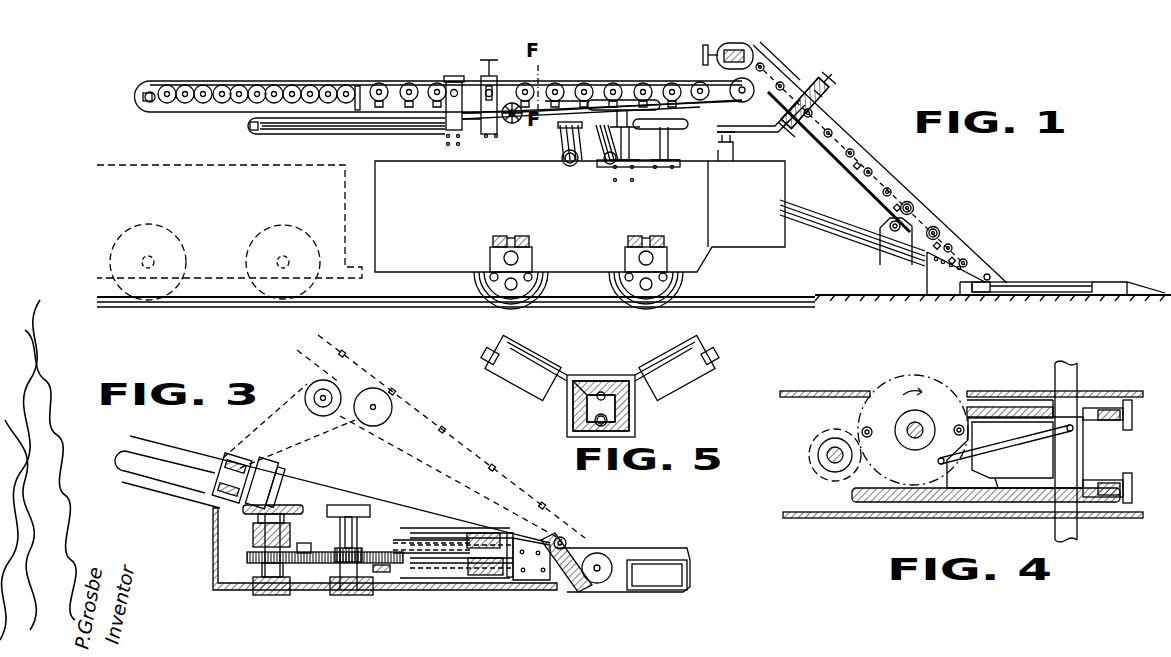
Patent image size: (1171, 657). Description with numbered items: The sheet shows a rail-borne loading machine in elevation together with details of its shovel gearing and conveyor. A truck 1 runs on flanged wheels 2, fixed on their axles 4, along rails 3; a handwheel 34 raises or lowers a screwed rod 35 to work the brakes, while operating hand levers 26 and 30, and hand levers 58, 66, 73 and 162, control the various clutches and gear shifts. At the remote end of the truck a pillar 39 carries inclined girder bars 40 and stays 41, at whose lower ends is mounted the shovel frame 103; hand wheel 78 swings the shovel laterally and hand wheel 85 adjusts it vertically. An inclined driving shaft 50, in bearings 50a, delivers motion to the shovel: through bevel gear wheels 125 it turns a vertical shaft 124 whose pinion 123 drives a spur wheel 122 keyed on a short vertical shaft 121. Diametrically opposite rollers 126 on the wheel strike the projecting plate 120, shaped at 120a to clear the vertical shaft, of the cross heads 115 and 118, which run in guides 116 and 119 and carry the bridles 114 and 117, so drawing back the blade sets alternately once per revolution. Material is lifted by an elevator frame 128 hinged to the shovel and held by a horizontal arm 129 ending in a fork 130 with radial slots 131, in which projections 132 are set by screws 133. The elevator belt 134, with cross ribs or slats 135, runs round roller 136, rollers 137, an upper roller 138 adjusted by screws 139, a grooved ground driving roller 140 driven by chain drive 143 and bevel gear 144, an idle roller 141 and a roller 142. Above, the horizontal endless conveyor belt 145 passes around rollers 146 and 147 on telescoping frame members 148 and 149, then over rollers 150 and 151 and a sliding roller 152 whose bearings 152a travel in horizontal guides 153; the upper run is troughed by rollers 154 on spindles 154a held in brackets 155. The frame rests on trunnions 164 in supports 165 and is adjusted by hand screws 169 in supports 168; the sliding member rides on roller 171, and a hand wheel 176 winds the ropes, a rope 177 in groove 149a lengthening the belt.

In FIG. 1, the truck 1 is at (580, 216).
In FIG. 1, the flanged wheels 2 is at (477, 285).
In FIG. 1, the rails 3 is at (742, 294).
In FIG. 1, the axles 4 is at (518, 258).
In FIG. 1, the operating hand lever 26 is at (562, 128).
In FIG. 1, the operating hand lever 30 is at (578, 160).
In FIG. 1, the handwheel 34 is at (685, 124).
In FIG. 1, the rod 35 is at (673, 160).
In FIG. 1, the pillar 39 is at (733, 150).
In FIG. 1, the inclined girder bars 40 is at (817, 228).
In FIG. 3, the inclined girder bars 40 is at (163, 500).
In FIG. 4, the inclined girder bars 40 is at (810, 390).
In FIG. 1, the stays 41 is at (797, 208).
In FIG. 3, the inclined driving shaft 50 is at (146, 465).
In FIG. 3, the bearings 50a is at (262, 460).
In FIG. 1, the hand lever 58 is at (627, 167).
In FIG. 1, the hand lever 66 is at (630, 147).
In FIG. 1, the hand lever 73 is at (597, 160).
In FIG. 1, the hand wheel 78 is at (597, 100).
In FIG. 1, the hand wheel 85 is at (625, 110).
In FIG. 1, the frame 103 is at (1087, 281).
In FIG. 3, the frame 103 is at (678, 555).
In FIG. 3, the bridle 114 is at (530, 540).
In FIG. 4, the bridle 114 is at (1067, 363).
In FIG. 3, the cross head 115 is at (563, 537).
In FIG. 4, the cross head 115 is at (1083, 453).
In FIG. 3, the guides 116 is at (446, 533).
In FIG. 4, the guides 116 is at (1047, 410).
In FIG. 3, the bridle 117 is at (500, 577).
In FIG. 3, the cross head 118 is at (477, 575).
In FIG. 3, the guides 119 is at (437, 580).
In FIG. 3, the projecting plate 120 is at (405, 540).
In FIG. 4, the projecting plate 120 is at (1007, 480).
In FIG. 4, the shaped portion 120a is at (918, 480).
In FIG. 3, the short vertical shaft 121 is at (358, 527).
In FIG. 4, the short vertical shaft 121 is at (921, 425).
In FIG. 3, the spur wheel 122 is at (323, 563).
In FIG. 4, the spur wheel 122 is at (917, 374).
In FIG. 3, the pinion 123 is at (247, 558).
In FIG. 4, the pinion 123 is at (825, 433).
In FIG. 3, the vertical shaft 124 is at (268, 595).
In FIG. 4, the vertical shaft 124 is at (826, 455).
In FIG. 3, the bevel gear wheels 125 is at (243, 512).
In FIG. 3, the rollers 126 is at (305, 542).
In FIG. 4, the rollers 126 is at (867, 426).
In FIG. 1, the frame 128 is at (980, 257).
In FIG. 1, the horizontal arm 129 is at (757, 126).
In FIG. 1, the fork 130 is at (810, 82).
In FIG. 1, the radial slots 131 is at (787, 128).
In FIG. 1, the projections 132 is at (823, 93).
In FIG. 1, the screws 133 is at (832, 78).
In FIG. 1, the elevator belt 134 is at (918, 208).
In FIG. 3, the elevator belt 134 is at (490, 465).
In FIG. 1, the cross ribs or slats 135 is at (874, 164).
In FIG. 3, the cross ribs or slats 135 is at (450, 434).
In FIG. 1, the roller 136 is at (993, 270).
In FIG. 3, the roller 136 is at (603, 580).
In FIG. 1, the rollers 137 is at (833, 133).
In FIG. 1, the roller 138 is at (733, 42).
In FIG. 1, the screws 139 is at (705, 46).
In FIG. 1, the ground driving roller 140 is at (913, 194).
In FIG. 3, the ground driving roller 140 is at (320, 384).
In FIG. 1, the idle roller 141 is at (938, 233).
In FIG. 3, the idle roller 141 is at (385, 390).
In FIG. 3, the roller 142 is at (589, 545).
In FIG. 1, the chain drive 143 is at (880, 222).
In FIG. 3, the chain drive 143 is at (258, 428).
In FIG. 3, the bevel gear 144 is at (207, 462).
In FIG. 1, the horizontal endless conveyor belt 145 is at (306, 84).
In FIG. 5, the horizontal endless conveyor belt 145 is at (567, 373).
In FIG. 1, the rollers 146 is at (777, 72).
In FIG. 1, the rollers 147 is at (148, 92).
In FIG. 1, the frame member 148 is at (380, 83).
In FIG. 5, the frame member 148 is at (630, 403).
In FIG. 1, the frame member 149 is at (242, 85).
In FIG. 5, the frame member 149 is at (607, 388).
In FIG. 5, the groove 149a is at (613, 427).
In FIG. 1, the roller 150 is at (496, 118).
In FIG. 1, the roller 151 is at (467, 133).
In FIG. 1, the roller 152 is at (253, 133).
In FIG. 1, the bearings 152a is at (263, 134).
In FIG. 1, the horizontal guides 153 is at (410, 128).
In FIG. 1, the rollers 154 is at (188, 85).
In FIG. 5, the rollers 154 is at (520, 375).
In FIG. 5, the spindles 154a is at (488, 352).
In FIG. 1, the brackets 155 is at (567, 100).
In FIG. 5, the brackets 155 is at (567, 413).
In FIG. 1, the hand lever 162 is at (565, 145).
In FIG. 1, the trunnions 164 is at (453, 80).
In FIG. 1, the supports 165 is at (448, 76).
In FIG. 1, the supports 168 is at (493, 83).
In FIG. 1, the hand screws 169 is at (491, 77).
In FIG. 1, the roller 171 is at (424, 78).
In FIG. 1, the hand wheel 176 is at (510, 125).
In FIG. 5, the rope 177 is at (600, 428).